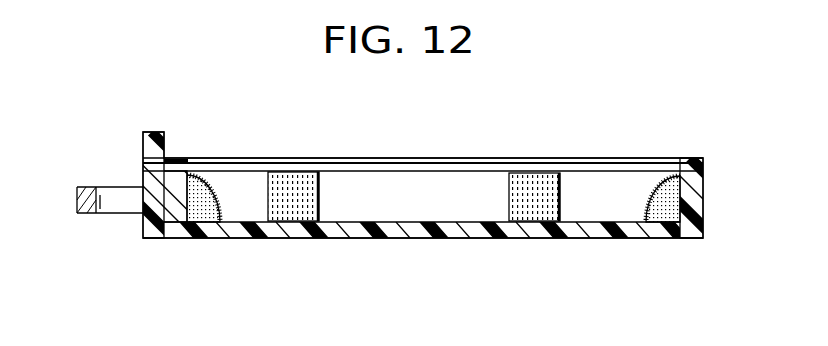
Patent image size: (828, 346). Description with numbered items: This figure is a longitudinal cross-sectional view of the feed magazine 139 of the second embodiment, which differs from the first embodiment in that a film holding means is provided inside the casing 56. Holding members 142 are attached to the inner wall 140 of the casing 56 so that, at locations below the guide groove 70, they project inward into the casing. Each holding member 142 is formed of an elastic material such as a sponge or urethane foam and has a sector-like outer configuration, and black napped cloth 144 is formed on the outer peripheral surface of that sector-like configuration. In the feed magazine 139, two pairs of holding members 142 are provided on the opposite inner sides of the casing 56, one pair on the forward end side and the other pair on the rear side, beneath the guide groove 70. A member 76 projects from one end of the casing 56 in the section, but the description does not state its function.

The feed magazine 139 is at (541, 121).
The inner wall 140 is at (697, 190).
The holding member 142 is at (207, 214).
The black napped cloth 144 is at (203, 177).
The guide groove 70 is at (585, 171).
The casing 56 is at (352, 238).
The connecting member 76 is at (87, 186).